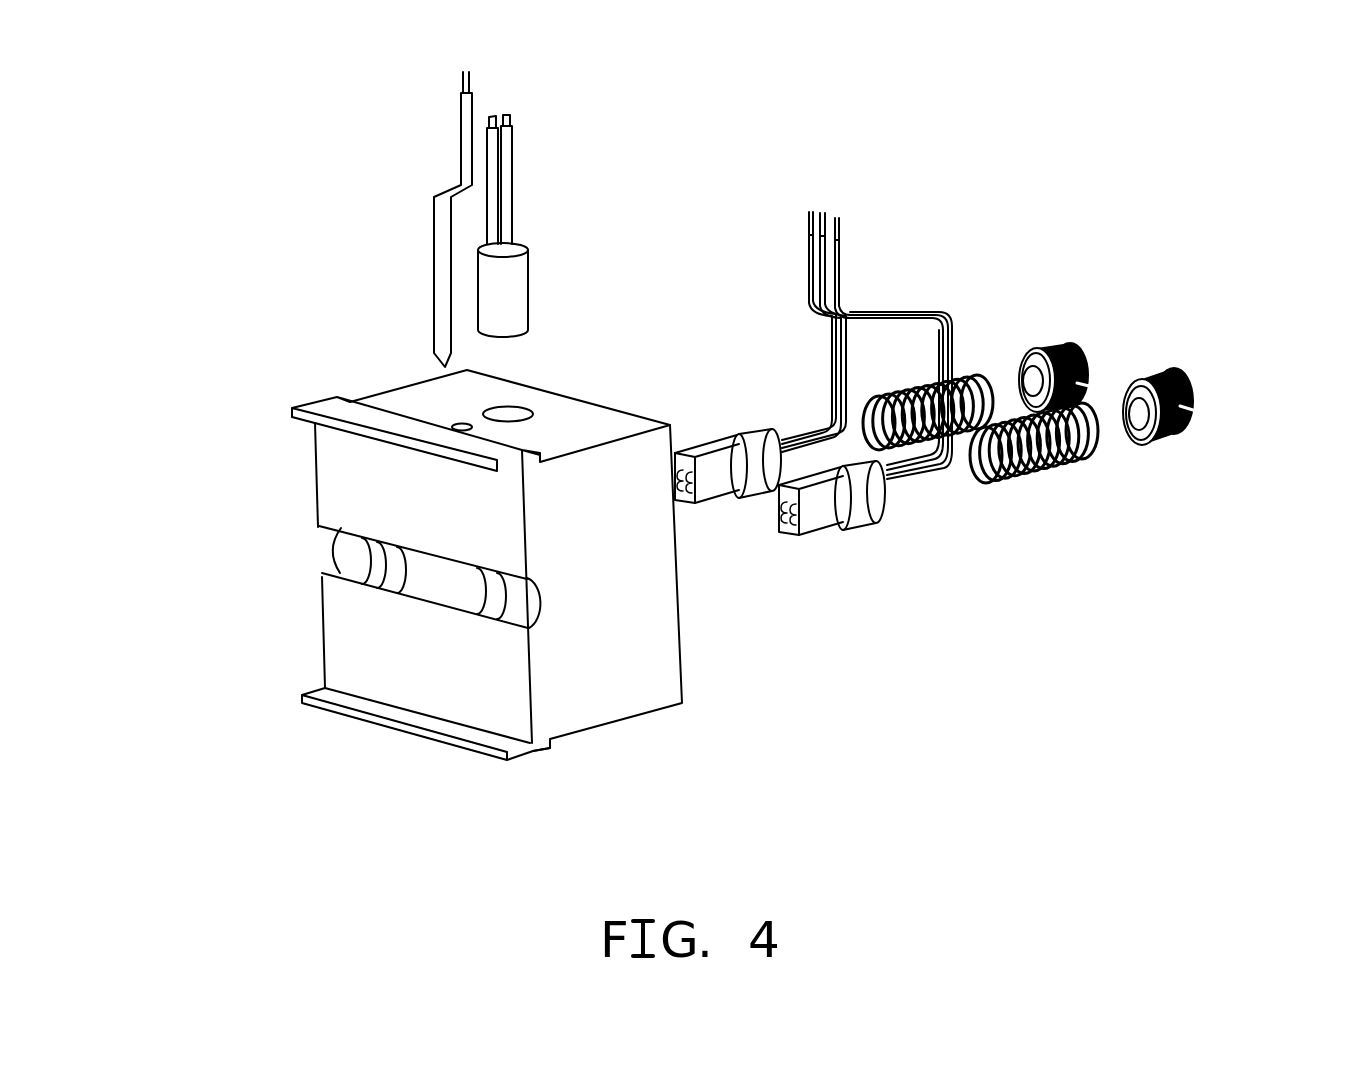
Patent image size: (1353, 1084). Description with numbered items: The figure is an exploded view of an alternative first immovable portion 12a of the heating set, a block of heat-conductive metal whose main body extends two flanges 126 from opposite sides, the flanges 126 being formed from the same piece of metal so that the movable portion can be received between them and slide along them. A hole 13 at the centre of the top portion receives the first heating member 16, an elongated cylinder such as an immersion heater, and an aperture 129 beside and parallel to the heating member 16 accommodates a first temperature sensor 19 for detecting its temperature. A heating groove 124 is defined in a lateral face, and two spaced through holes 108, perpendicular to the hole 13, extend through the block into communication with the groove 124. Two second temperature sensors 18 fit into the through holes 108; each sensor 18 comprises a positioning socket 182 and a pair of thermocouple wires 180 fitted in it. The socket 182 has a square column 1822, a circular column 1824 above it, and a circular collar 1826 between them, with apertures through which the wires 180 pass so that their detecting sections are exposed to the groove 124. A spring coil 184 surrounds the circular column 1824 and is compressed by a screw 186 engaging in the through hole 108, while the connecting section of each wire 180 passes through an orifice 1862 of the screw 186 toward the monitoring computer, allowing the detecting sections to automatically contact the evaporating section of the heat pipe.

The first immovable portion 12a is at (348, 386).
The flanges 126 is at (322, 690).
The hole 13 is at (512, 412).
The aperture 129 is at (457, 425).
The heating groove 124 is at (525, 600).
The through holes 108 is at (493, 597).
The first temperature sensor 19 is at (462, 152).
The first heating member 16 is at (503, 290).
The second temperature sensors 18 is at (818, 378).
The thermocouple wires 180 is at (840, 263).
The positioning socket 182 is at (847, 568).
The square column 1822 is at (799, 552).
The circular collar 1826 is at (879, 548).
The circular column 1824 is at (1012, 640).
The spring coil 184 is at (978, 372).
The screw 186 is at (1145, 423).
The orifice 1862 is at (1145, 413).